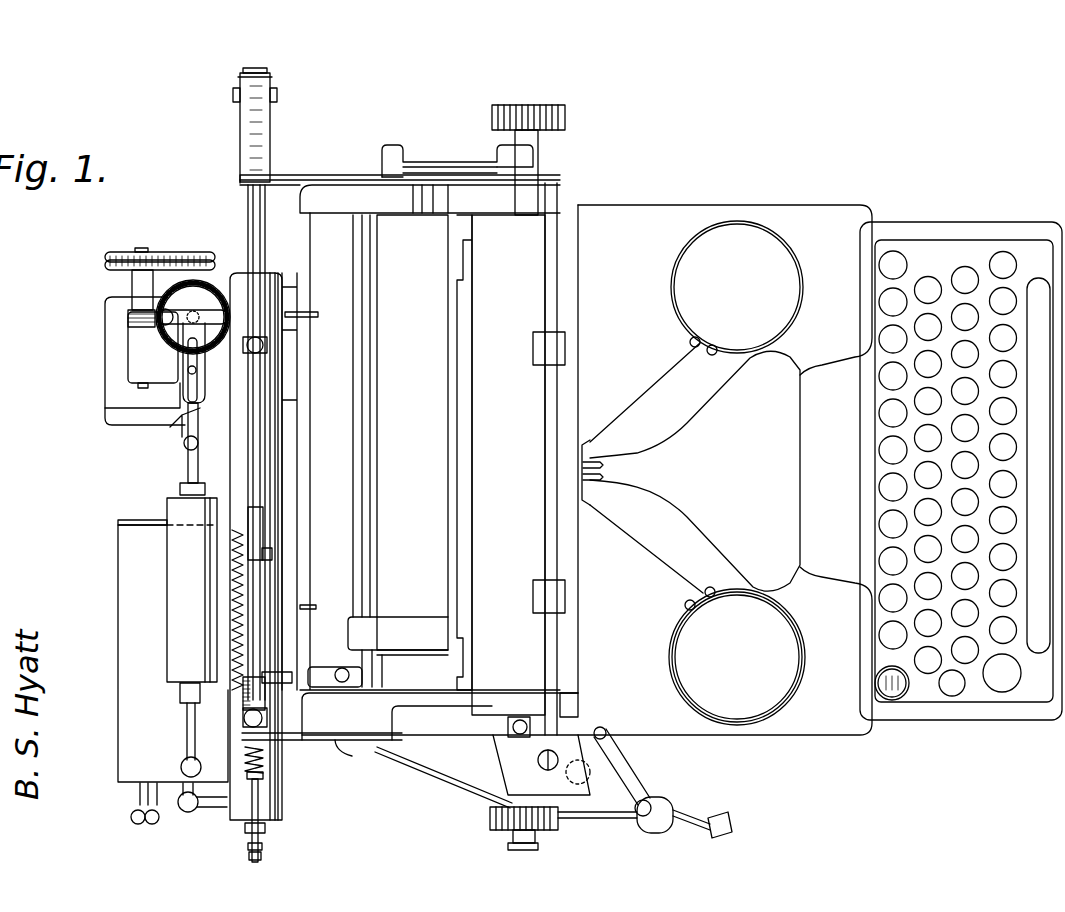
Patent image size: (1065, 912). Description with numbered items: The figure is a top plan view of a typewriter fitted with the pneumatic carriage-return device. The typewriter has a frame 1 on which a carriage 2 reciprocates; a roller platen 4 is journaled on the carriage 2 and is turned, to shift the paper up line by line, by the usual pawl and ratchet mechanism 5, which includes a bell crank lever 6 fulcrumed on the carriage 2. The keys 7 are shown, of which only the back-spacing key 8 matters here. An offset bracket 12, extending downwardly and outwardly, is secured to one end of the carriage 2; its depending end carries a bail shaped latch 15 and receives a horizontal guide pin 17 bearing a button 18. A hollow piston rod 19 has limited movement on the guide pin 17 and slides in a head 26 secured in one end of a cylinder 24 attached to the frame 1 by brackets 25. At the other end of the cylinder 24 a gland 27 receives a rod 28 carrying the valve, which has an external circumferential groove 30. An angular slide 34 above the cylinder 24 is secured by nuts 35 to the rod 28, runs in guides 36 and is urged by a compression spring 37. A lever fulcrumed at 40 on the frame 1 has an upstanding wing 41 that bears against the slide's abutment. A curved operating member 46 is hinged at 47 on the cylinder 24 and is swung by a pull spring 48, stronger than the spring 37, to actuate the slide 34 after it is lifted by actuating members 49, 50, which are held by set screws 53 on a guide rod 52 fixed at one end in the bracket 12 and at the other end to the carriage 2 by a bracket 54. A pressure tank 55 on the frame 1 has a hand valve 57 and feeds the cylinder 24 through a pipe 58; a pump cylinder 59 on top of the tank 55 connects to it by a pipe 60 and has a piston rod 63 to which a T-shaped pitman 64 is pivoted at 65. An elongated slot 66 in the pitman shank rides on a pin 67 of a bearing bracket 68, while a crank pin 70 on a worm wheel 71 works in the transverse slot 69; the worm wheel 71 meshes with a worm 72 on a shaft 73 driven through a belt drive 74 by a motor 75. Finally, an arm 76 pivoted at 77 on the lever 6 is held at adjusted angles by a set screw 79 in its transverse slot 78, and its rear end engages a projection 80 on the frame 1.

The frame 1 is at (878, 199).
The carriage 2 is at (396, 218).
The roller platen 4 is at (572, 300).
The pawl and ratchet mechanism 5 is at (540, 728).
The bell crank lever 6 is at (718, 838).
The keys 7 is at (973, 267).
The back-spacing key 8 is at (898, 700).
The offset bracket 12 is at (250, 113).
The latch 15 is at (268, 74).
The guide pin 17 is at (243, 73).
The button 18 is at (278, 96).
The hollow piston rod 19 is at (247, 207).
The cylinder 24 is at (296, 439).
The brackets 25 is at (289, 296).
The head 26 is at (268, 275).
The gland 27 is at (265, 832).
The rod 28 is at (262, 860).
The external circumferential groove 30 is at (320, 672).
The angular slide 34 is at (281, 808).
The nuts 35 is at (250, 848).
The guides 36 is at (263, 774).
The compression spring 37 is at (263, 762).
The fulcrum 40 is at (350, 677).
The upstanding wing 41 is at (247, 680).
The curved operating member 46 is at (266, 522).
The hinged mounting 47 is at (266, 558).
The pull spring 48 is at (240, 572).
The actuating member 49 is at (265, 342).
The actuating member 50 is at (246, 715).
The guide rod 52 is at (255, 224).
The set screws 53 is at (262, 350).
The bracket 54 is at (342, 746).
The pressure tank 55 is at (122, 608).
The hand valve 57 is at (140, 808).
The pipe 58 is at (207, 808).
The pump cylinder 59 is at (175, 512).
The pipe 60 is at (188, 725).
The piston rod 63 is at (190, 470).
The T-shaped pitman 64 is at (180, 426).
The pivot 65 is at (189, 446).
The elongated slot 66 is at (188, 396).
The pin 67 is at (190, 371).
The bearing bracket 68 is at (138, 338).
The elongated transverse slot 69 is at (208, 305).
The crank pin 70 is at (172, 313).
The worm wheel 71 is at (163, 290).
The worm 72 is at (125, 311).
The shaft 73 is at (142, 250).
The belt drive 74 is at (117, 257).
The motor 75 is at (112, 342).
The arm 76 is at (478, 798).
The pivot 77 is at (650, 820).
The transverse slot 78 is at (668, 798).
The set screw 79 is at (678, 813).
The projection 80 is at (422, 718).